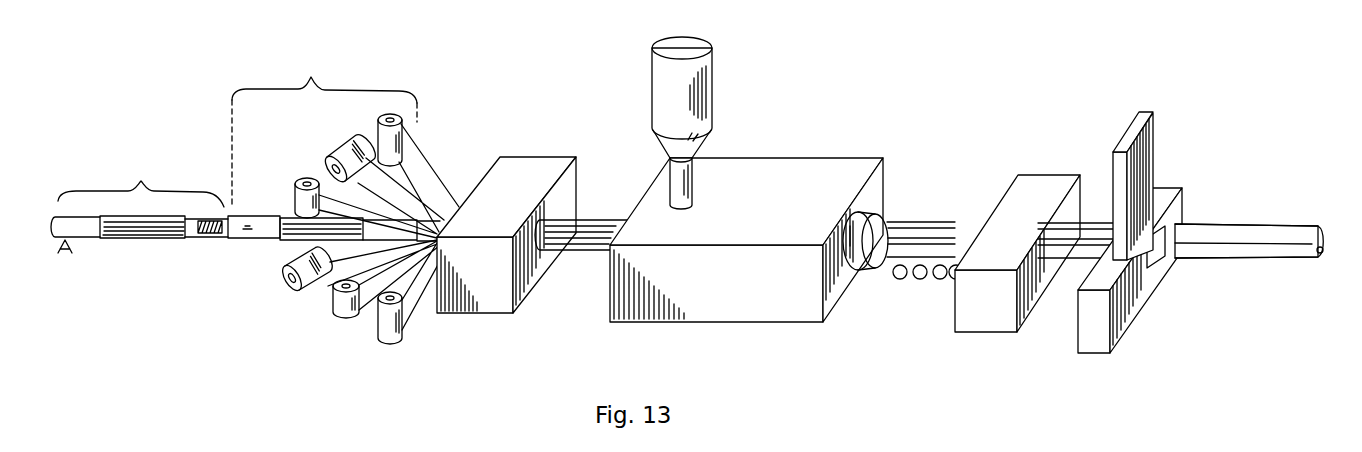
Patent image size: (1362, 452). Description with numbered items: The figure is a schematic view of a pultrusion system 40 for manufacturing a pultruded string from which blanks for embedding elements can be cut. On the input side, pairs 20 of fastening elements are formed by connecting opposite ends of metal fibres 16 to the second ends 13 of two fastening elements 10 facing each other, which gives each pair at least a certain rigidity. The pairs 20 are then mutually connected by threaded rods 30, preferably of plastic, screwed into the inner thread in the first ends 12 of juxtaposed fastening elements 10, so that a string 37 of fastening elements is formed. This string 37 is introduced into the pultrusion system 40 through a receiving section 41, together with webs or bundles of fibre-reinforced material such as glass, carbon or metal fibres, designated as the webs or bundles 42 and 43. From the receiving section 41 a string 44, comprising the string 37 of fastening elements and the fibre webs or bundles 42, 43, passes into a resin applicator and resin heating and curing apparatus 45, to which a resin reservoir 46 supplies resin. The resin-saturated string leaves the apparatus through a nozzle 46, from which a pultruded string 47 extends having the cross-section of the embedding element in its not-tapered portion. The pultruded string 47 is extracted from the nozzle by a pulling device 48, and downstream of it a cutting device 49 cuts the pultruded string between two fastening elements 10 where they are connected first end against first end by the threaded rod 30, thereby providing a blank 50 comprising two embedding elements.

The fastening element 10 is at (78, 243).
The first end of fastening element 12 is at (322, 358).
The second end of fastening element 13 is at (173, 240).
The metal fibres 16 is at (133, 240).
The pair of fastening elements 20 is at (237, 128).
The threaded rod 30 is at (213, 247).
The string of fastening elements 37 is at (68, 253).
The pultrusion system 40 is at (911, 168).
The receiving section 41 is at (537, 166).
The webs or bundles of fibres 42 is at (435, 165).
The webs or bundles of fibres 43 is at (368, 130).
The string 44 is at (571, 251).
The resin applicator and resin heating and curing apparatus 45 is at (763, 167).
The resin reservoir and nozzle 46 is at (712, 61).
The pultruded string 47 is at (923, 223).
The pulling device 48 is at (1044, 177).
The cutting device 49 is at (1175, 170).
The blank 50 is at (1252, 212).